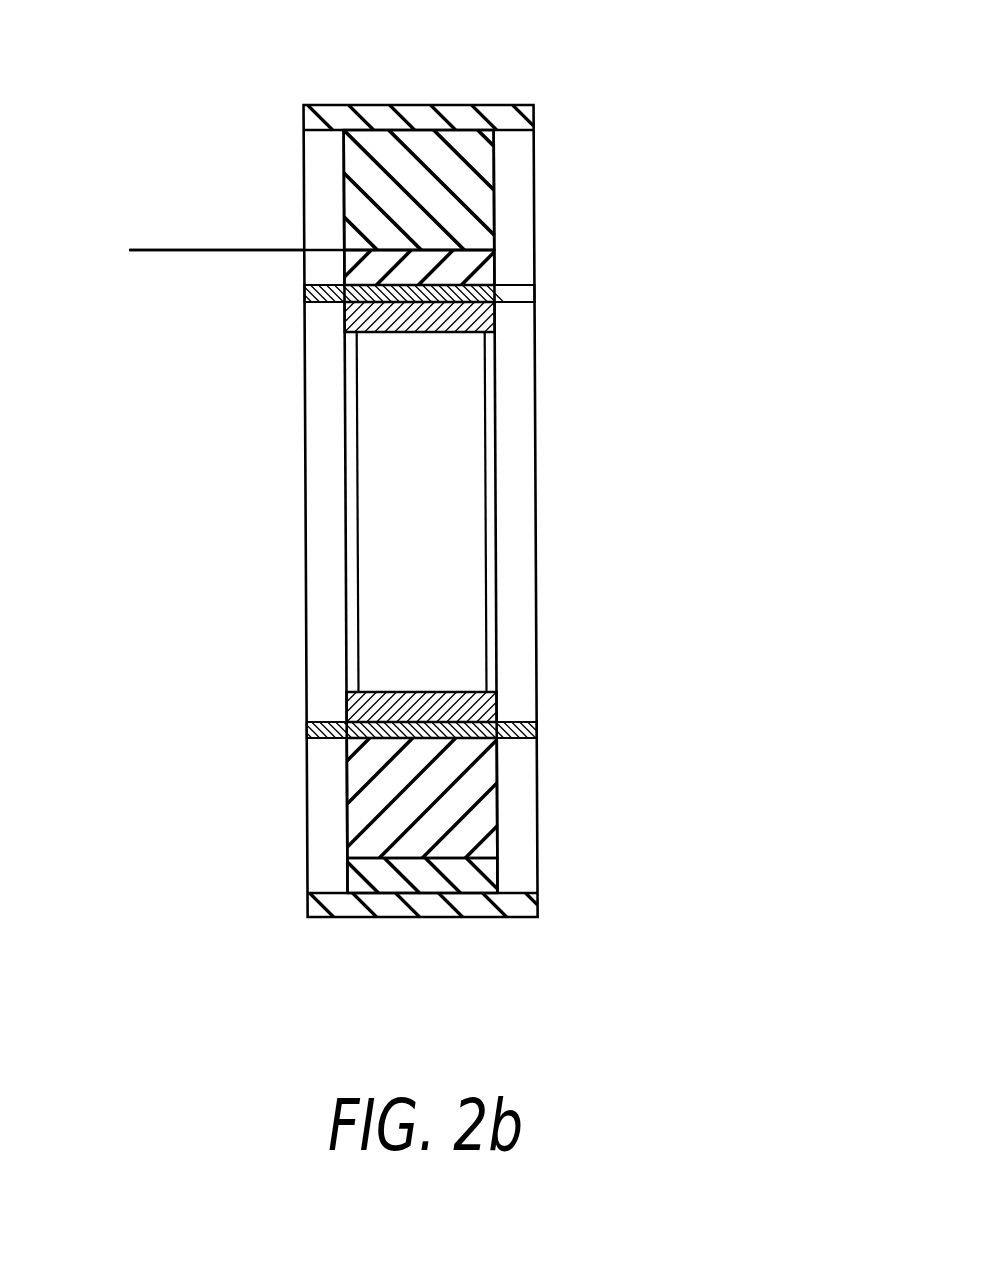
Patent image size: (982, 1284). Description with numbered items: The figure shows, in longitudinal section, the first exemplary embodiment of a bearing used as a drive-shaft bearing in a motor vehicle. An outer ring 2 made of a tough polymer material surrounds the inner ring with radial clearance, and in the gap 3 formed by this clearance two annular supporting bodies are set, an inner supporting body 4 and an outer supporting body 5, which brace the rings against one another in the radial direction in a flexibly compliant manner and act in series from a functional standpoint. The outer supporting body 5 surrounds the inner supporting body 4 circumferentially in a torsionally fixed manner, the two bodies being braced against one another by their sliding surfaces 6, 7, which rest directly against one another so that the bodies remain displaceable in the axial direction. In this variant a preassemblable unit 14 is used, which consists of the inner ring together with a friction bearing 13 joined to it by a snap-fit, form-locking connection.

The outer ring 2 is at (465, 112).
The gap 3 is at (517, 217).
The inner supporting body 4 is at (483, 273).
The outer supporting body 5 is at (480, 170).
The sliding surface 6 is at (200, 249).
The sliding surface 7 is at (158, 250).
The friction bearing 13 is at (357, 712).
The preassemblable unit 14 is at (478, 318).